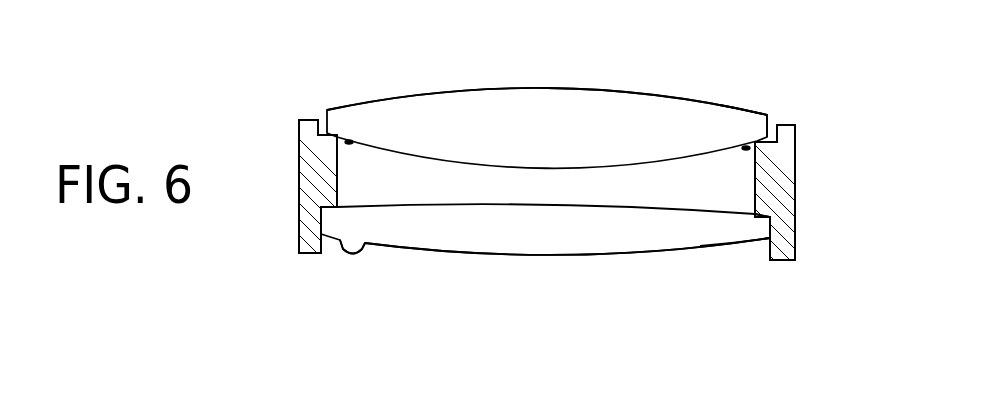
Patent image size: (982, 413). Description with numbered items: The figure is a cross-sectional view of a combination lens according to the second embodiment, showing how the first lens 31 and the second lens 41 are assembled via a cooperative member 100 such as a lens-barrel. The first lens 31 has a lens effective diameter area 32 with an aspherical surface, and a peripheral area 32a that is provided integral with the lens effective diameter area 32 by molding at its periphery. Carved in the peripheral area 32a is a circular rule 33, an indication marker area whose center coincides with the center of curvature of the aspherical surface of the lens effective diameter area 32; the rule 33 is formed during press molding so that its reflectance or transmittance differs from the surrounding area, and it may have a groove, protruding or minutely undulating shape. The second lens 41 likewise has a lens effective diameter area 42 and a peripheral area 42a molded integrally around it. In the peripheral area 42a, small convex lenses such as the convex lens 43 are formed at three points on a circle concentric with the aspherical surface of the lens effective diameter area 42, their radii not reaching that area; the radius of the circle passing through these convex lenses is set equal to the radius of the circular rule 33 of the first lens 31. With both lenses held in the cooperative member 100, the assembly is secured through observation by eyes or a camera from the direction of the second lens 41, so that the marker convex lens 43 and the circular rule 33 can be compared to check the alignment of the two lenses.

The cooperative member 100 is at (795, 228).
The first lens 31 is at (640, 108).
The lens effective diameter area 32 is at (717, 139).
The peripheral area 32a is at (772, 115).
The circular rule 33 is at (757, 168).
The second lens 41 is at (417, 235).
The lens effective diameter area 42 is at (717, 240).
The peripheral area 42a is at (718, 268).
The convex lens 43 is at (353, 254).